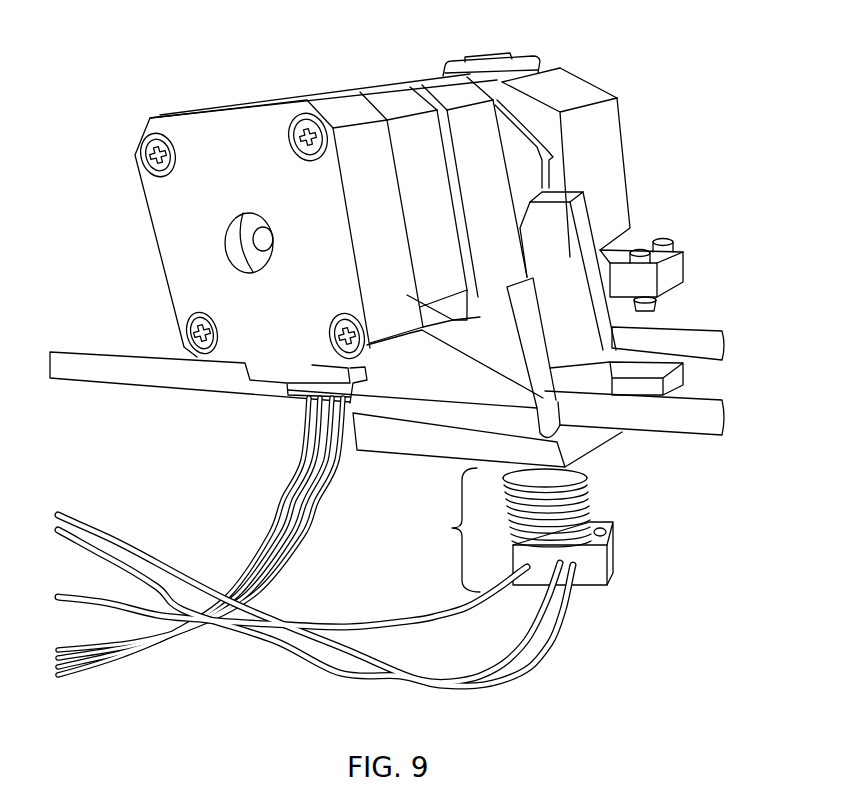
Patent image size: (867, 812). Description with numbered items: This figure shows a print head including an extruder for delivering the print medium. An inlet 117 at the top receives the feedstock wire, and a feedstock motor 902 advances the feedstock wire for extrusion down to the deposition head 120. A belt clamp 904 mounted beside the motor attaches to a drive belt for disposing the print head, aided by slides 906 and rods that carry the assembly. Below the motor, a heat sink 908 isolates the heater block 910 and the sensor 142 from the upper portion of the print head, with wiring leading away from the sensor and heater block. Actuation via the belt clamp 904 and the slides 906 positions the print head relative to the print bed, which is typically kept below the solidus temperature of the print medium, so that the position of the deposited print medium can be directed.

The inlet 117 is at (512, 53).
The feedstock motor 902 is at (490, 190).
The belt clamp 904 is at (673, 280).
The slides 906 is at (630, 412).
The heat sink 908 is at (607, 488).
The heater block 910 is at (583, 567).
The deposition head 120 is at (444, 530).
The sensor 142 is at (557, 560).